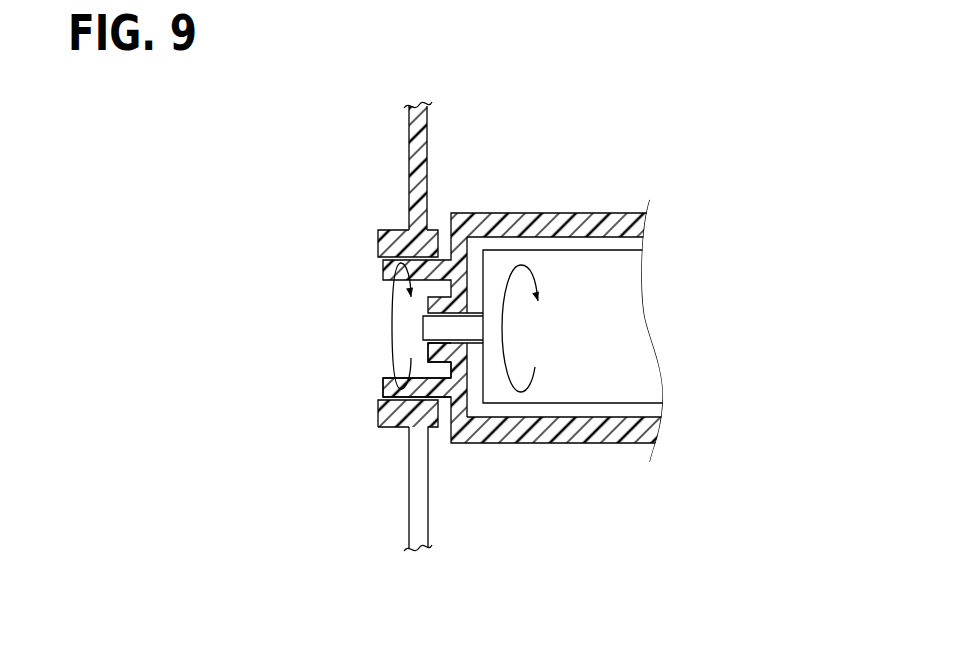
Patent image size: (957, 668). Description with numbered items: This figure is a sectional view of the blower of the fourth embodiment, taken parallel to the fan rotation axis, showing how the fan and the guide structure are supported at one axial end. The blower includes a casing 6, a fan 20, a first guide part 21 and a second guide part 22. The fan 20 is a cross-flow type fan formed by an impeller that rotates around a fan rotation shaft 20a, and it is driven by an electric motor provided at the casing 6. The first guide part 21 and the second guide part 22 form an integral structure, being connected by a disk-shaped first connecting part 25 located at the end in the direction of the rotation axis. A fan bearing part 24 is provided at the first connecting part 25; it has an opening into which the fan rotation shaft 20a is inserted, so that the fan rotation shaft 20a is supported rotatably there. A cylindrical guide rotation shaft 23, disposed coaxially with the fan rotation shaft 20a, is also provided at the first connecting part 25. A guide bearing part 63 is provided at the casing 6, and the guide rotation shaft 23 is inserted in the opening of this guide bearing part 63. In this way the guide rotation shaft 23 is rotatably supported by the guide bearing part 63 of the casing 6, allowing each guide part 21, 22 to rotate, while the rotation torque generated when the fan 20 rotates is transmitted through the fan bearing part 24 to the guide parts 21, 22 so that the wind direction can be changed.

The casing 6 is at (370, 326).
The guide bearing part 63 is at (383, 242).
The fan 20 is at (481, 331).
The fan rotation shaft 20a is at (430, 330).
The first guide part 21 is at (570, 433).
The second guide part 22 is at (562, 217).
The guide rotation shaft 23 is at (392, 385).
The fan bearing part 24 is at (433, 350).
The first connecting part 25 is at (458, 373).